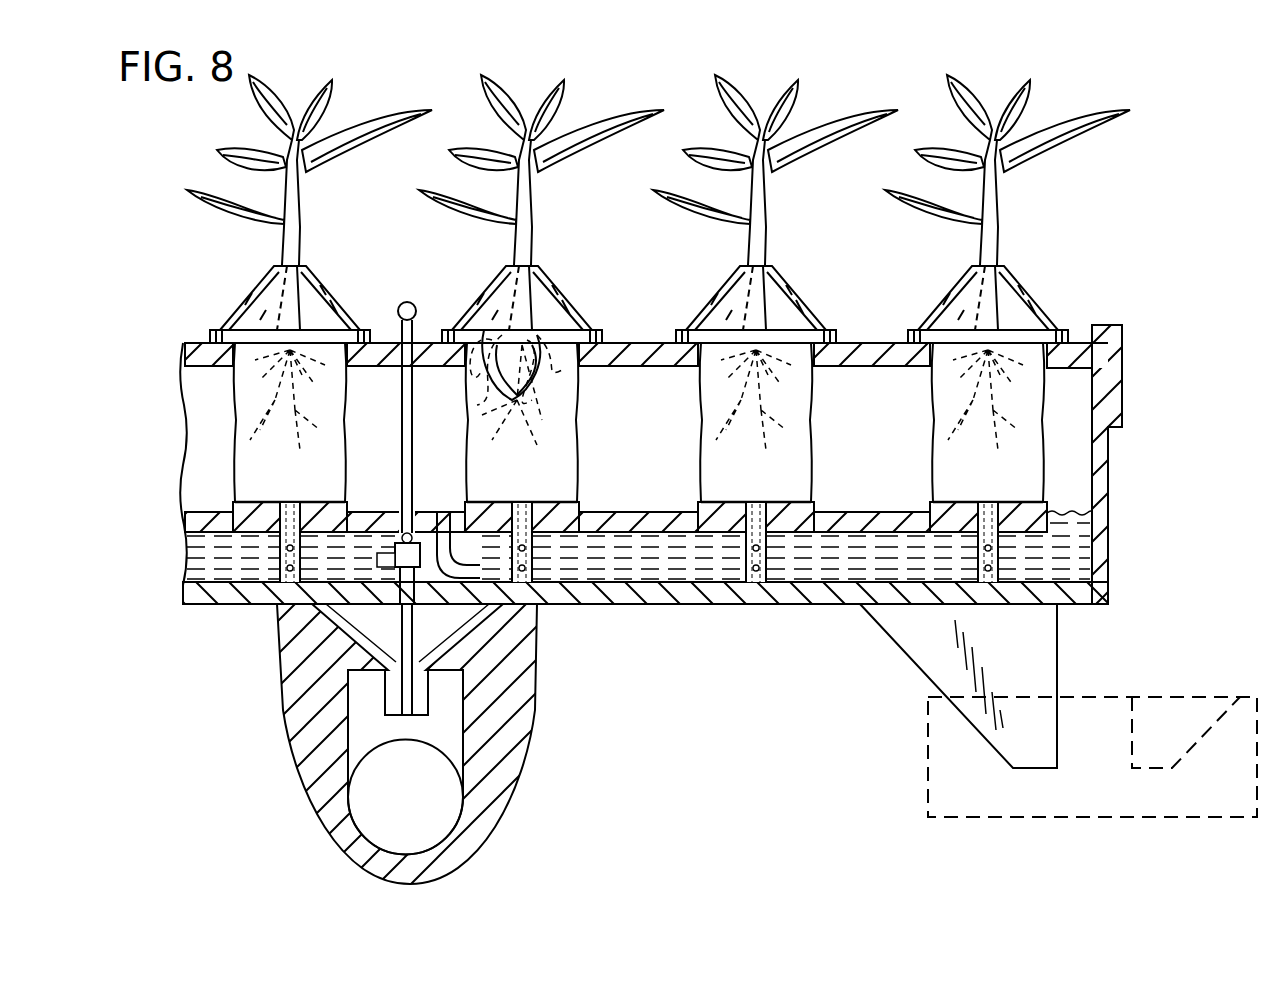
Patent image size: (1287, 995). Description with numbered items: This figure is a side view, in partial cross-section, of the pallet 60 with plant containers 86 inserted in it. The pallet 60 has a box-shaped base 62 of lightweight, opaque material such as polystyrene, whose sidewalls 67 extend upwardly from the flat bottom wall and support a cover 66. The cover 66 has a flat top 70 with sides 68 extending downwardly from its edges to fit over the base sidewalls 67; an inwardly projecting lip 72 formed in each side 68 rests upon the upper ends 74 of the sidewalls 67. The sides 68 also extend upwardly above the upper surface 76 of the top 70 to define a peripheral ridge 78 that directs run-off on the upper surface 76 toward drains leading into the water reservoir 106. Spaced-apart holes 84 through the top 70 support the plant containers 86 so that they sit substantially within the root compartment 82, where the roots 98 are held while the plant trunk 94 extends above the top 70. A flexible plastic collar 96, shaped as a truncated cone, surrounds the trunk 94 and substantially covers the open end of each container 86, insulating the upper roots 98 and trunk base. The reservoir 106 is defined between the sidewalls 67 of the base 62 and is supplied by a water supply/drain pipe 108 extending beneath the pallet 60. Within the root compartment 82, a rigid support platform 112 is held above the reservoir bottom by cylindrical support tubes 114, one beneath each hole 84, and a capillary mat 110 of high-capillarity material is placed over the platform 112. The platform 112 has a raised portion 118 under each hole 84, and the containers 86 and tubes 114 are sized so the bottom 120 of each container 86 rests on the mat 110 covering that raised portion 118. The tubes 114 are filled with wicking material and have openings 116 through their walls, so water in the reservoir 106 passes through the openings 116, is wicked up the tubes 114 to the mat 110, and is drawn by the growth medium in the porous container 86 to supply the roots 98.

The pallet 60 is at (706, 638).
The base 62 is at (1113, 487).
The cover 66 is at (1128, 392).
The sidewalls 67 is at (1108, 548).
The sides 68 is at (1125, 406).
The top 70 is at (641, 340).
The lip 72 is at (1083, 342).
The upper ends 74 is at (1098, 360).
The upper surface 76 is at (868, 385).
The peripheral ridge 78 is at (1118, 325).
The root compartment 82 is at (386, 378).
The holes 84 is at (566, 422).
The plant containers 86 is at (715, 422).
The plant trunk 94 is at (658, 170).
The collar 96 is at (619, 291).
The roots 98 is at (608, 400).
The water reservoir 106 is at (1108, 587).
The water supply/drain pipe 108 is at (413, 655).
The capillary mat 110 is at (654, 516).
The support platform 112 is at (877, 553).
The support tubes 114 is at (275, 547).
The openings 116 is at (898, 603).
The raised portion 118 is at (587, 478).
The bottom 120 is at (689, 476).